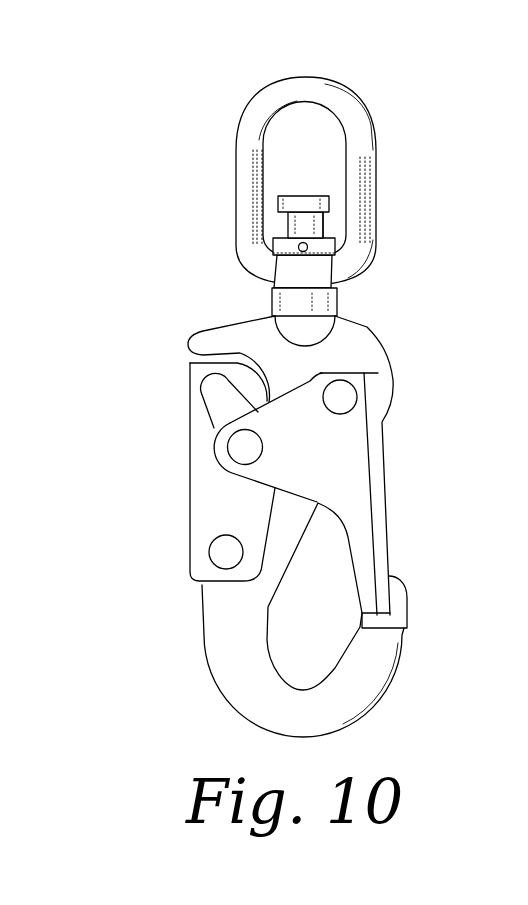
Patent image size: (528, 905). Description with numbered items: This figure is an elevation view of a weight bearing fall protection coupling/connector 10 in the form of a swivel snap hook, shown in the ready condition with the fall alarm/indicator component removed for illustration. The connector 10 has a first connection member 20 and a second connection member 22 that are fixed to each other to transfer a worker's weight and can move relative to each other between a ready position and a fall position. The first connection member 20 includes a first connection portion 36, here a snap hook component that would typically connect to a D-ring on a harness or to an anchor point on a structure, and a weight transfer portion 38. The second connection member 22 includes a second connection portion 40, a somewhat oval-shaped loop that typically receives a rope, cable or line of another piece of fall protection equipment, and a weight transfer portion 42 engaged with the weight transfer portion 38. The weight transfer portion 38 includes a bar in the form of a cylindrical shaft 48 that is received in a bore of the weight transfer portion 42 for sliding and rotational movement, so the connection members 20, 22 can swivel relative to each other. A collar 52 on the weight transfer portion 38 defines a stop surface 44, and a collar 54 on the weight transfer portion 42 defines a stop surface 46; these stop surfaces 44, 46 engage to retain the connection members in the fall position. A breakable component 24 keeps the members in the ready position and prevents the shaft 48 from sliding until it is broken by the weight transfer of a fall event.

The fall protection coupling/connector 10 is at (210, 82).
The first connection member 20 is at (183, 601).
The second connection member 22 is at (361, 86).
The breakable component 24 is at (273, 238).
The first connection portion 36 is at (405, 565).
The weight transfer portion 38 is at (338, 188).
The second connection portion 40 is at (243, 133).
The weight transfer portion 42 is at (344, 270).
The stop surface 44 is at (325, 220).
The stop surface 46 is at (296, 246).
The cylindrical shaft 48 is at (297, 225).
The collar 52 is at (303, 202).
The collar 54 is at (333, 240).